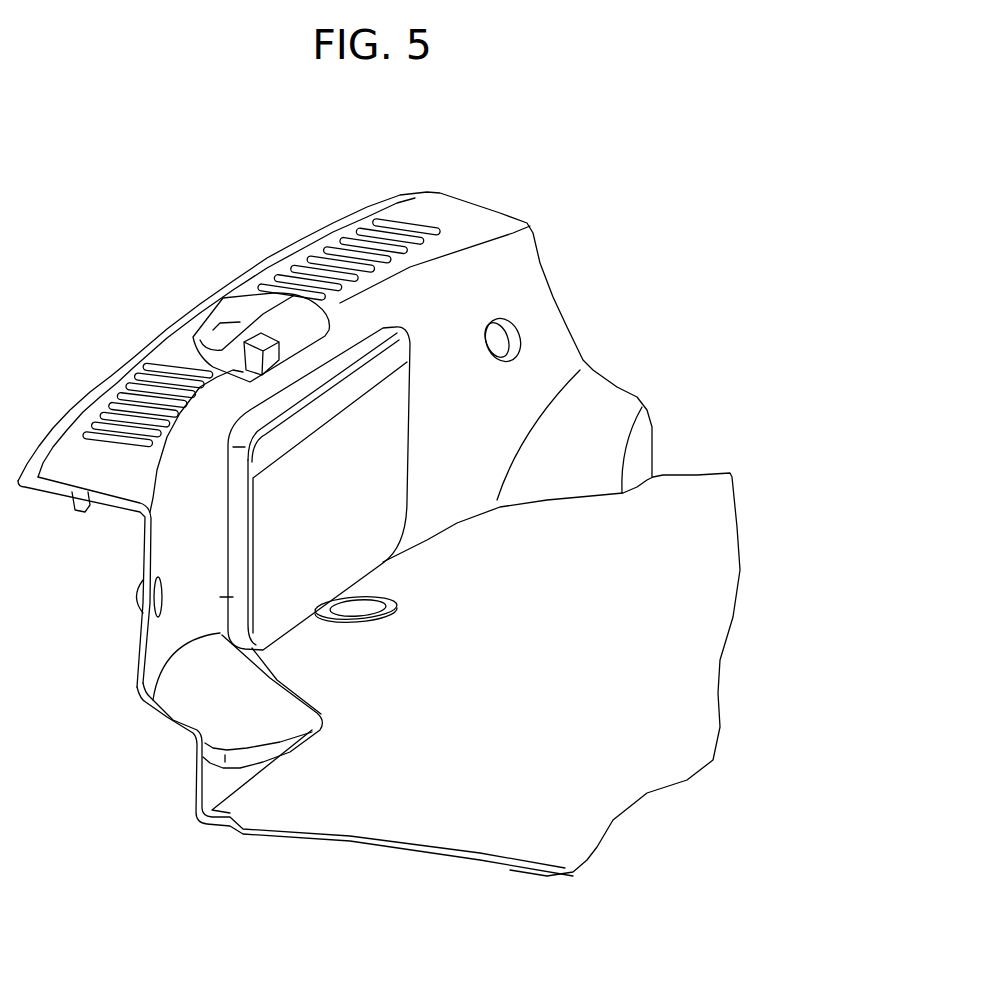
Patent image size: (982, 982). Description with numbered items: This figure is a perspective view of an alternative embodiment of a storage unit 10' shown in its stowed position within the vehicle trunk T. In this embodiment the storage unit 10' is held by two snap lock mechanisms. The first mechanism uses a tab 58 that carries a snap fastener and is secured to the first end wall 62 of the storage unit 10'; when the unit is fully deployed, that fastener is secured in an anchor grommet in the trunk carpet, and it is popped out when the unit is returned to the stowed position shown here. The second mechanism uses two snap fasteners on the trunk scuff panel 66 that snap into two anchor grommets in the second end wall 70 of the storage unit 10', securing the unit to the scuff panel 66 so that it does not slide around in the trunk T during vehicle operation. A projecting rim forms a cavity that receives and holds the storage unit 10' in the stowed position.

The storage unit 10' is at (335, 502).
The trunk T is at (598, 420).
The trunk scuff panel 66 is at (205, 527).
The second end wall 70 is at (233, 597).
The first end wall 62 is at (360, 517).
The tab 58 is at (363, 623).